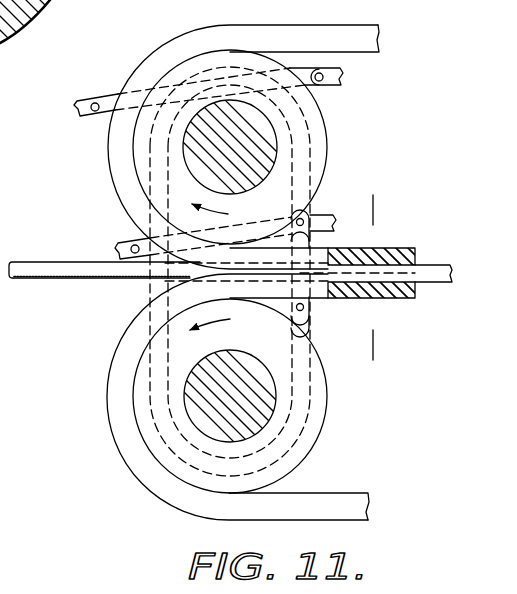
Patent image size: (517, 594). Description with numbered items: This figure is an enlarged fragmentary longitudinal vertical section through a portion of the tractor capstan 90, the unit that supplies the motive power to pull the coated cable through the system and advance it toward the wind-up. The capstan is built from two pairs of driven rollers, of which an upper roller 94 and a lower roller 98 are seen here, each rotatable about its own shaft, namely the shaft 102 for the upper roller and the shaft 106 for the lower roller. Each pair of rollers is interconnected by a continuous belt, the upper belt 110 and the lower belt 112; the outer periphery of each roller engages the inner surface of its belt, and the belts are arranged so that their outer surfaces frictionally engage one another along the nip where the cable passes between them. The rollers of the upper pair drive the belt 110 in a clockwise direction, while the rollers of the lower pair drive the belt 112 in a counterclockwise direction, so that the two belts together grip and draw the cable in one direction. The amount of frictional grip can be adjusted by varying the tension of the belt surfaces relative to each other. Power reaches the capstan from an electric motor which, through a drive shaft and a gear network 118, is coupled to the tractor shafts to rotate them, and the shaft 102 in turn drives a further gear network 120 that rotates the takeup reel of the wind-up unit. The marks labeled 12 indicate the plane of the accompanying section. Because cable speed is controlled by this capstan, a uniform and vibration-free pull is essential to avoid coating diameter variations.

The tractor capstan 90 is at (110, 463).
The driven roller 94 is at (318, 153).
The driven roller 98 is at (306, 426).
The shaft 102 is at (196, 169).
The shaft 106 is at (188, 397).
The continuous belt 110 is at (368, 38).
The continuous belt 112 is at (183, 503).
The gear network 118 is at (346, 89).
The gear network 120 is at (73, 117).
The section line 12- 12 is at (376, 205).